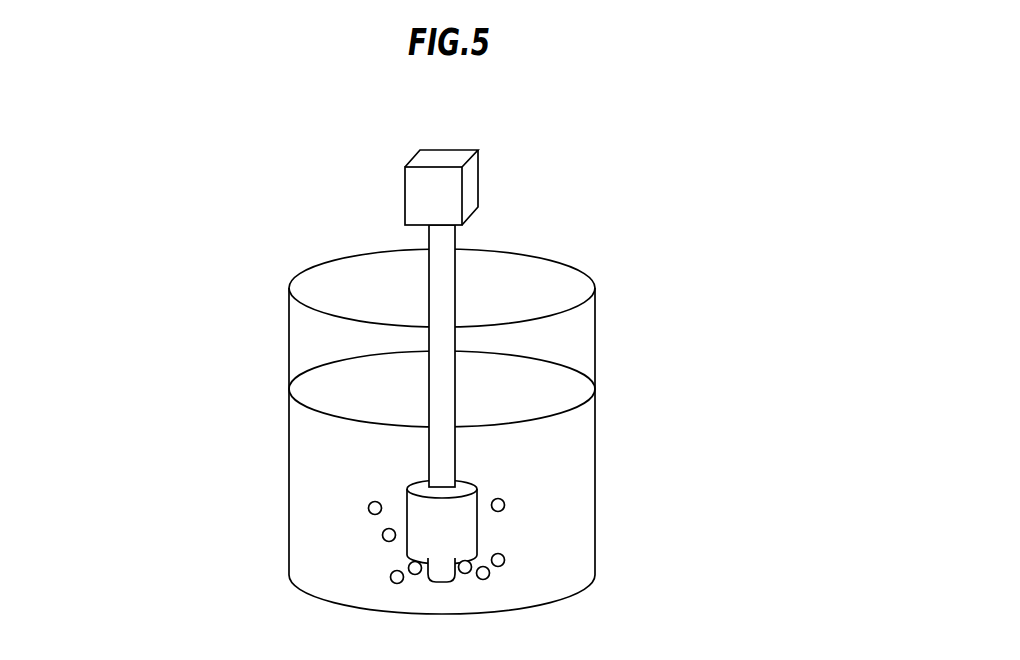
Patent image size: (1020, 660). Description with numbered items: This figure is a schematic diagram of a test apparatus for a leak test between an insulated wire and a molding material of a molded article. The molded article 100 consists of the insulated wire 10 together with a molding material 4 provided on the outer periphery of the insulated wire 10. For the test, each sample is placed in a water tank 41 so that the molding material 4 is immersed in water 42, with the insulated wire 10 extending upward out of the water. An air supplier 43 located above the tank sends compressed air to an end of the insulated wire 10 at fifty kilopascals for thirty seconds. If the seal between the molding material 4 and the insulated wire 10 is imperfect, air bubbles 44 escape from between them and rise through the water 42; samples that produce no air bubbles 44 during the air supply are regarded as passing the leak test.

The molded article 100 is at (515, 358).
The molding material 4 is at (457, 540).
The insulated wire 10 is at (443, 275).
The water tank 41 is at (290, 313).
The water 42 is at (299, 424).
The air supplier 43 is at (475, 167).
The air bubbles 44 is at (505, 558).